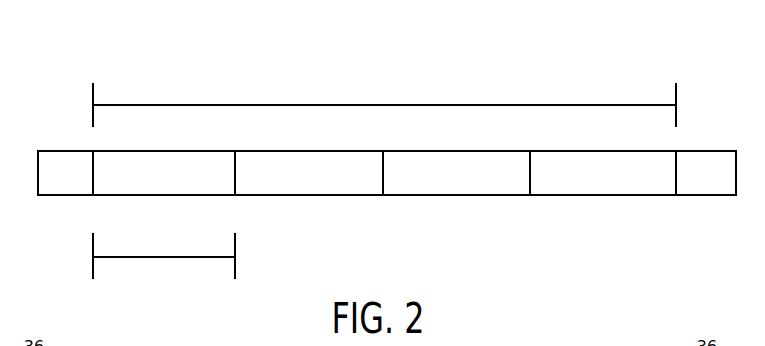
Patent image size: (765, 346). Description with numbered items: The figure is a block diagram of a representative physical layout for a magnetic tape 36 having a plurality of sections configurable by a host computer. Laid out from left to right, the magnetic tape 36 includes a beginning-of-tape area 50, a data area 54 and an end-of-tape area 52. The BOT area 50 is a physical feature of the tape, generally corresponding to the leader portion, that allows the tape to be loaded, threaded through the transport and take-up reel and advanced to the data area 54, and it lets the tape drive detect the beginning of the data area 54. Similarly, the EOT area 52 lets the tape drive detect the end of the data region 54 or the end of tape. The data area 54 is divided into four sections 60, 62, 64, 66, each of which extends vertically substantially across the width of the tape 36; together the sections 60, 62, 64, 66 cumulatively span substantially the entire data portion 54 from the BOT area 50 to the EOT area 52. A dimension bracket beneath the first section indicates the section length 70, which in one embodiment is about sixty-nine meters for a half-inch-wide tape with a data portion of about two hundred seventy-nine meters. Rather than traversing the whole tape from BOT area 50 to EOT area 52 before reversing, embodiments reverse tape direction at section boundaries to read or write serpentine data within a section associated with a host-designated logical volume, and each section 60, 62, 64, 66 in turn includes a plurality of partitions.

The magnetic tape 36 is at (597, 64).
The beginning-of-tape (BOT) area 50 is at (62, 156).
The end-of-tape (EOT) area 52 is at (705, 157).
The data area 54 is at (343, 105).
The section 60 is at (166, 190).
The section 62 is at (318, 190).
The section 64 is at (457, 190).
The section 66 is at (623, 190).
The section length 70 is at (185, 257).